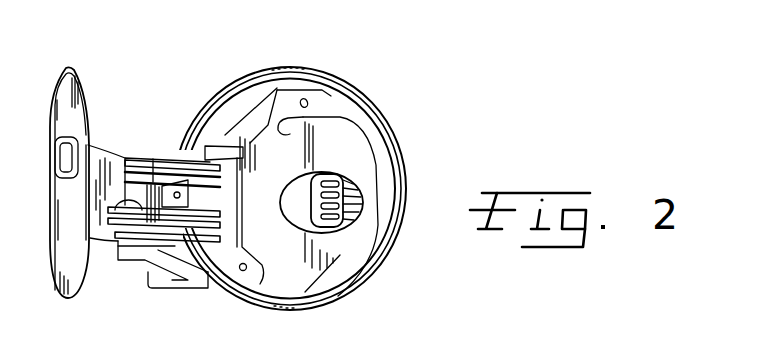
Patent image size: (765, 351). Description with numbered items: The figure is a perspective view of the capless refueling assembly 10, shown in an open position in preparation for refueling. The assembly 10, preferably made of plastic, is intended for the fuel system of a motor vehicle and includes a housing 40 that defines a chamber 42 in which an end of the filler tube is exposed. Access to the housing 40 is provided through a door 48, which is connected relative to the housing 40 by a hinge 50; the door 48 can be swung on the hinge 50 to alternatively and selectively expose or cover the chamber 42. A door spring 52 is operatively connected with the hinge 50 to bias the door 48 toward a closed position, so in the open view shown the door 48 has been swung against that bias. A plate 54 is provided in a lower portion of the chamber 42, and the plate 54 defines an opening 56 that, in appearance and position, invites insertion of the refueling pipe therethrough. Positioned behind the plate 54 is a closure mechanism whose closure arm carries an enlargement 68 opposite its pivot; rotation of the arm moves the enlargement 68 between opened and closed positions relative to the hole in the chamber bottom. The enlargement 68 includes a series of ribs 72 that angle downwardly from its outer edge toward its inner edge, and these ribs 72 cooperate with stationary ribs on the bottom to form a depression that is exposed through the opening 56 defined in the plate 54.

The capless refueling assembly 10 is at (263, 188).
The housing 40 is at (388, 121).
The chamber 42 is at (302, 94).
The door 48 is at (72, 300).
The hinge 50 is at (128, 158).
The door spring 52 is at (150, 160).
The plate 54 is at (273, 257).
The opening 56 is at (344, 204).
The enlargement 68 is at (337, 226).
The ribs 72 is at (318, 211).